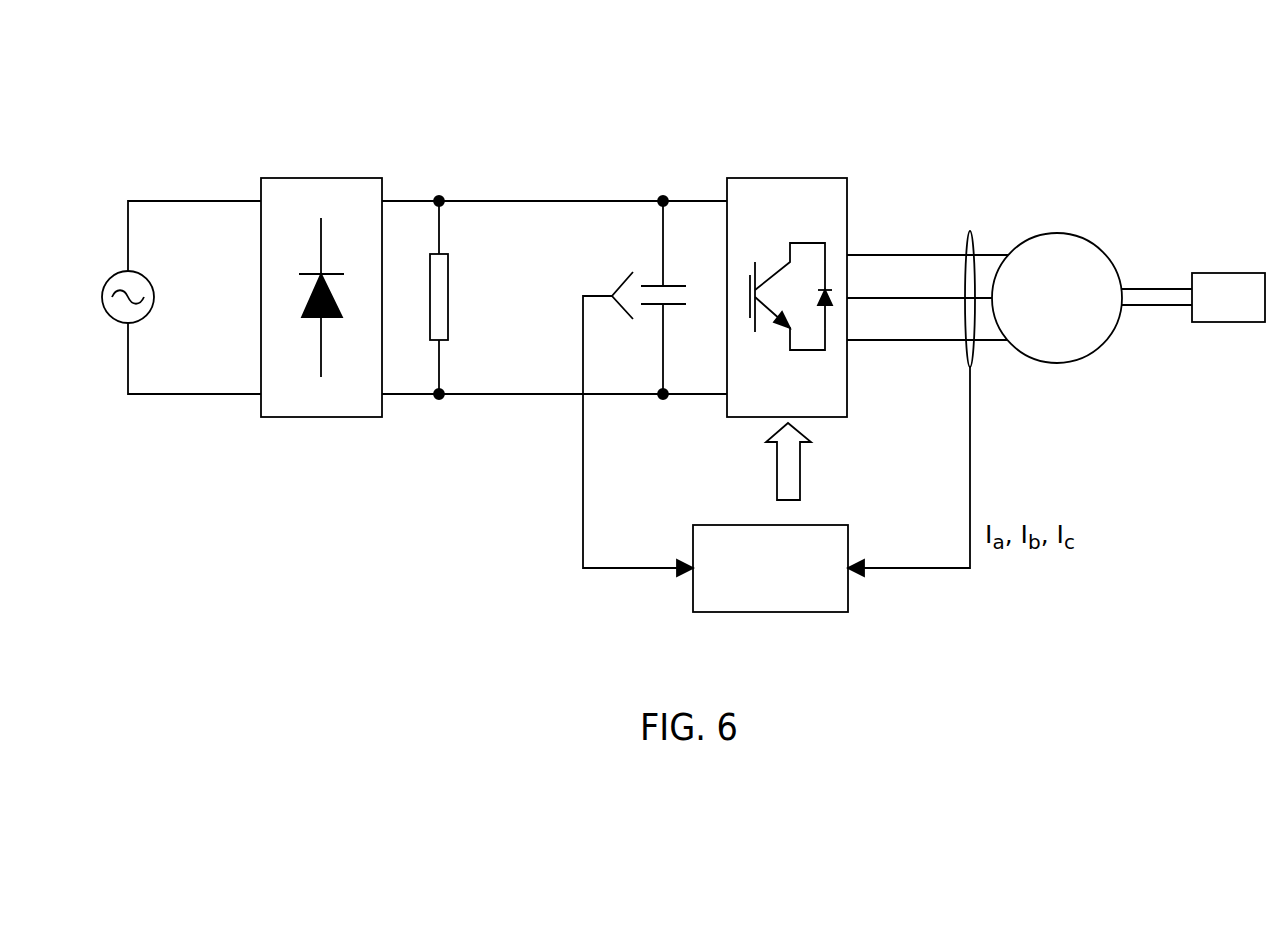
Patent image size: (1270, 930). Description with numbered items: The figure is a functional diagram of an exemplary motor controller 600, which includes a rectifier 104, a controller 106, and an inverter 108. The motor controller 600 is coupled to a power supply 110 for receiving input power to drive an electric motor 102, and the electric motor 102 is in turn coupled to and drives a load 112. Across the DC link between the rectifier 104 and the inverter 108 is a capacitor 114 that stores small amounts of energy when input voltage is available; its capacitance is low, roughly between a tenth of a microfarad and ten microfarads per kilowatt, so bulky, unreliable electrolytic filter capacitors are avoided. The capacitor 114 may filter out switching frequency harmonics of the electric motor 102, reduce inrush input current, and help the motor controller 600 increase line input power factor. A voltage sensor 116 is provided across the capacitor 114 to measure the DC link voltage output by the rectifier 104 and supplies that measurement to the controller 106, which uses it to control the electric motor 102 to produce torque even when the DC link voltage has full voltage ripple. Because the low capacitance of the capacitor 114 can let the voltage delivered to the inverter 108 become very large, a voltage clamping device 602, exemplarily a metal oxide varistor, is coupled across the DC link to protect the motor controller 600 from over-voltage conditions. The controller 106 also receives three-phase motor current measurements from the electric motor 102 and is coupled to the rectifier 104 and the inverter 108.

The motor controller 600 is at (1005, 92).
The power supply 110 is at (107, 288).
The rectifier 104 is at (297, 178).
The voltage clamping device 602 is at (448, 328).
The capacitor 114 is at (647, 283).
The voltage sensor 116 is at (638, 567).
The inverter 108 is at (775, 178).
The electric motor 102 is at (1088, 348).
The load 112 is at (1246, 312).
The controller 106 is at (725, 523).